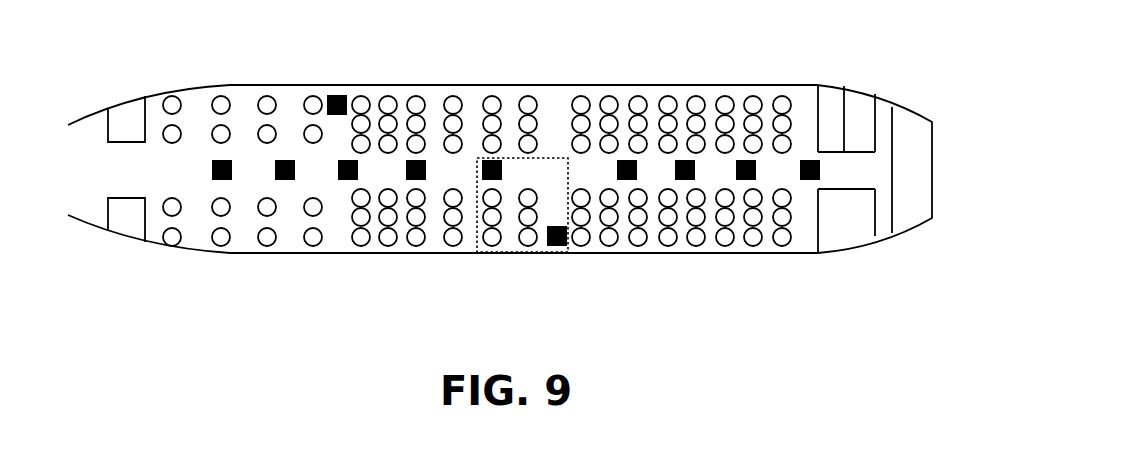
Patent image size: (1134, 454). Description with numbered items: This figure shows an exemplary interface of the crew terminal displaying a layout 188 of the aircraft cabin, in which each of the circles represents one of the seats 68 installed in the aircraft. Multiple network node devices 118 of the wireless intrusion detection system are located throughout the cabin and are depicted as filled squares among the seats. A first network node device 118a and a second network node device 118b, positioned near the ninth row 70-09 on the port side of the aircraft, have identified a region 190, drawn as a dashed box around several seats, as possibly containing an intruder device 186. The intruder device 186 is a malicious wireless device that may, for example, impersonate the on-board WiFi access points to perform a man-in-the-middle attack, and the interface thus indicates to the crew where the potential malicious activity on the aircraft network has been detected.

The seats 68 is at (800, 93).
The layout 188 is at (140, 169).
The network node device 118 is at (287, 160).
The first network node device 118a is at (558, 246).
The second network node device 118b is at (488, 160).
The intruder device 186 is at (523, 222).
The region 190 is at (477, 251).
The ninth row 70-09 is at (492, 265).